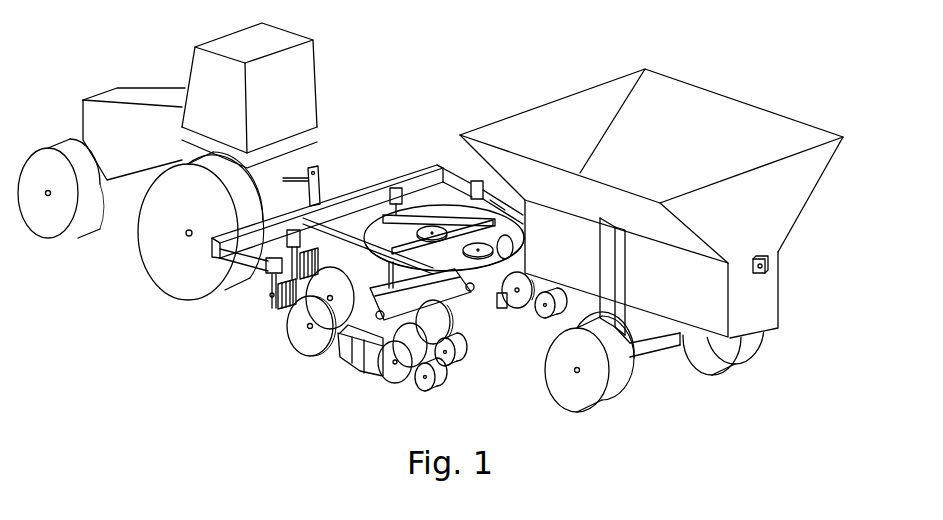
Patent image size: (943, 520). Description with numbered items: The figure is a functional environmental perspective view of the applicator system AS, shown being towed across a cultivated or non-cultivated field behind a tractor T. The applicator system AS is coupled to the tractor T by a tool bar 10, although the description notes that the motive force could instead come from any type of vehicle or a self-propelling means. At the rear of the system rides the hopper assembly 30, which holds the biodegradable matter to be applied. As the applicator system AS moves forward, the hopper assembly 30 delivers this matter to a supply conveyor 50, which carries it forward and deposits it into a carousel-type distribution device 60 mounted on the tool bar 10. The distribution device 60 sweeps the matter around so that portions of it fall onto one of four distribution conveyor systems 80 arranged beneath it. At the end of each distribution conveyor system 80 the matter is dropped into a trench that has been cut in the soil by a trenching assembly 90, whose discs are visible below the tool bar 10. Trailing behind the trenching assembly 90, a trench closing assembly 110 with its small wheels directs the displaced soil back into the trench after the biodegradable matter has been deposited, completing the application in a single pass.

The tractor T is at (156, 75).
The applicator system AS is at (458, 88).
The tool bar 10 is at (410, 175).
The hopper assembly 30 is at (722, 122).
The supply conveyor 50 is at (504, 236).
The carousel-type distribution device 60 is at (442, 224).
The distribution conveyor system 80 is at (432, 288).
The trenching assembly 90 is at (331, 357).
The trench closing assembly 110 is at (407, 386).